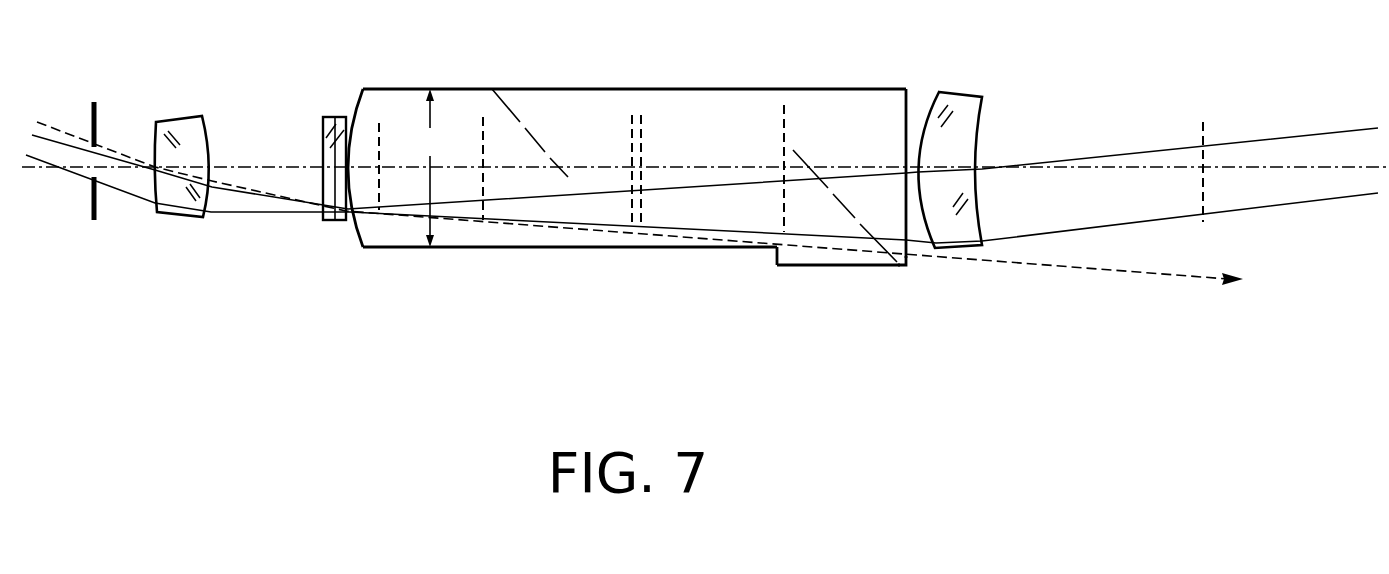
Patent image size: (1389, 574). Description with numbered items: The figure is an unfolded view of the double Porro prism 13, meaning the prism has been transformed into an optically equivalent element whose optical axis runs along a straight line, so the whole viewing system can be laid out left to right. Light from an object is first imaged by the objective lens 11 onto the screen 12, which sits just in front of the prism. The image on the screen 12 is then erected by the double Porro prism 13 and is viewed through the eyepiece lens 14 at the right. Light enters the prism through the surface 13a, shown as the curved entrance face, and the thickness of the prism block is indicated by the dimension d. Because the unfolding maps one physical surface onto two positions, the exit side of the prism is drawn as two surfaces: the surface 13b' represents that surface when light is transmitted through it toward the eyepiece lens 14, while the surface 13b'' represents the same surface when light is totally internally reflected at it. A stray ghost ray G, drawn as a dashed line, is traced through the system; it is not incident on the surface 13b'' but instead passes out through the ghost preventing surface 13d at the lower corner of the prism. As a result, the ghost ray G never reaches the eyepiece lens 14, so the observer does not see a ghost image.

The objective lens 11 is at (190, 117).
The screen 12 is at (335, 117).
The double Porro prism 13 is at (634, 178).
The surface 13a is at (352, 228).
The surface 13b' is at (903, 145).
The surface 13b'' is at (838, 299).
The ghost preventing surface 13d is at (906, 265).
The eyepiece lens 14 is at (960, 95).
The ghost ray G is at (667, 237).
The thickness of glass block d is at (430, 168).